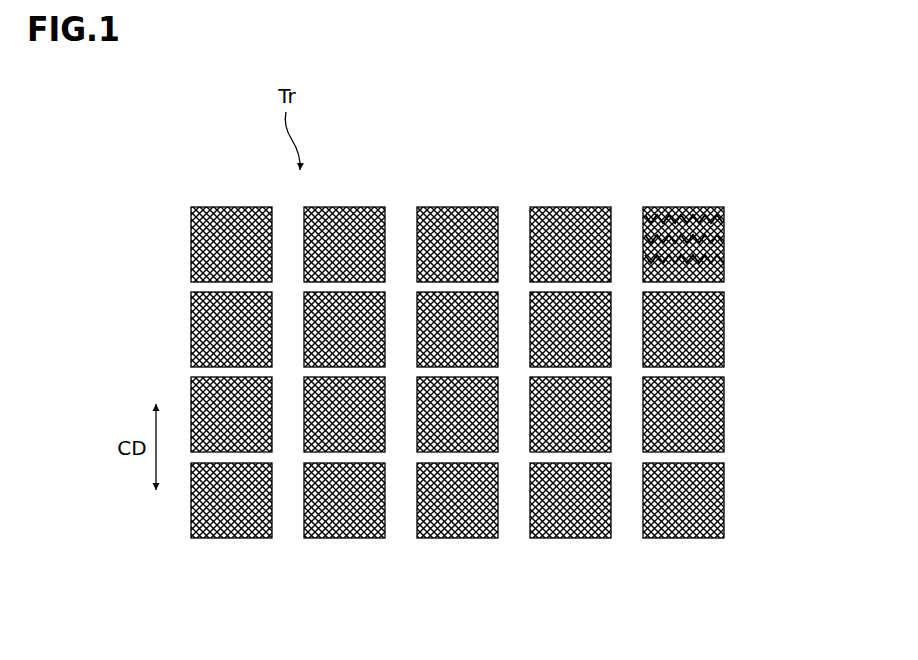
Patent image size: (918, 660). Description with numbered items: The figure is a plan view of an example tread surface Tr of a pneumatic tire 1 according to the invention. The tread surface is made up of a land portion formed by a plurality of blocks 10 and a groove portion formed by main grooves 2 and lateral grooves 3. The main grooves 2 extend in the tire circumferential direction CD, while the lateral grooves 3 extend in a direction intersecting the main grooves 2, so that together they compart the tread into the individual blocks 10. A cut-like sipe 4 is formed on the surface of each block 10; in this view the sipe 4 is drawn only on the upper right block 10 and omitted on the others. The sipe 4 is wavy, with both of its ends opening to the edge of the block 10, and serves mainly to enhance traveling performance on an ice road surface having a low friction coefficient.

The absorbent sheet / nonwoven fabric 1 is at (461, 207).
The block 10 is at (213, 207).
The sipe 4 is at (670, 208).
The lateral groove 3 is at (724, 287).
The main groove 2 is at (292, 532).